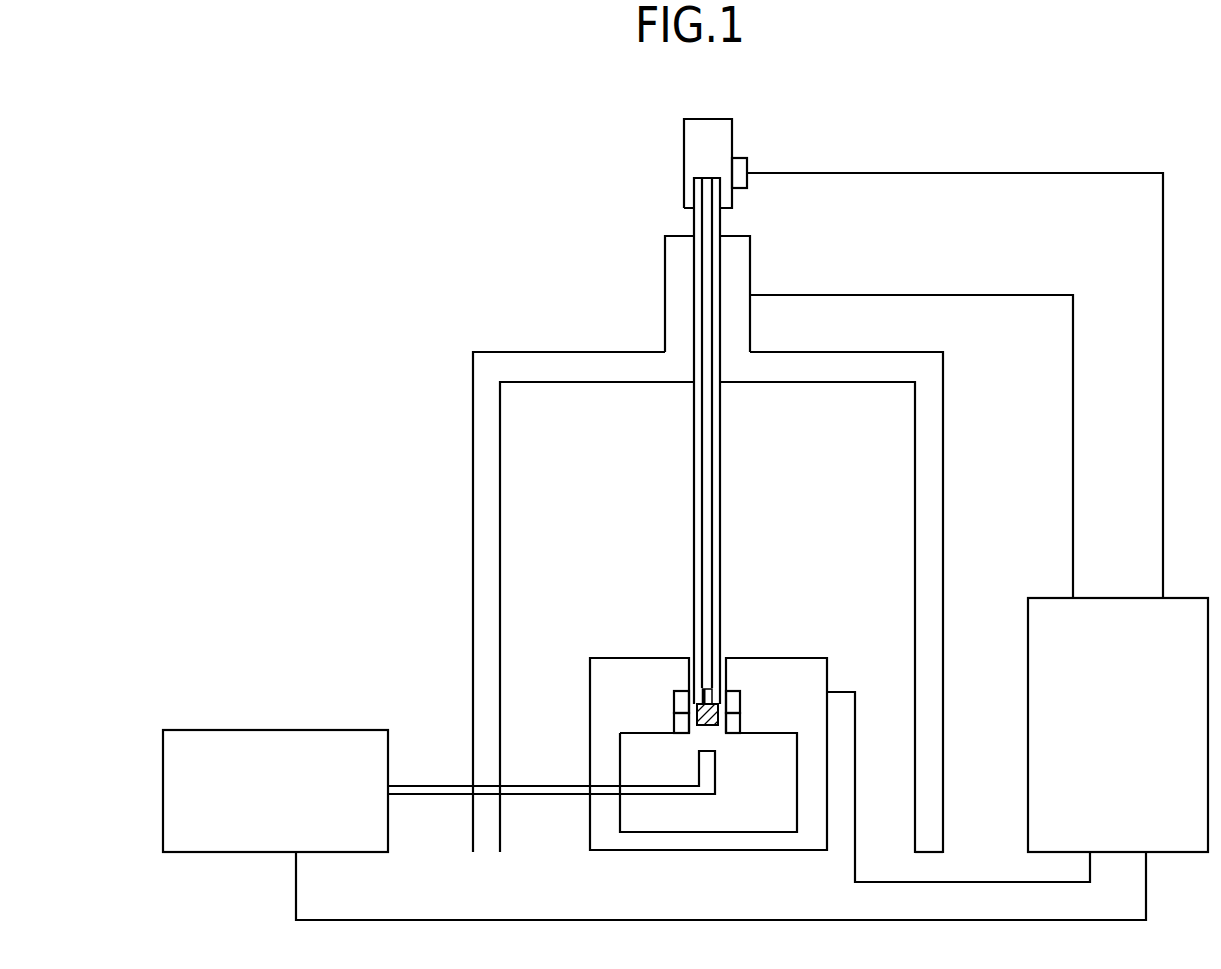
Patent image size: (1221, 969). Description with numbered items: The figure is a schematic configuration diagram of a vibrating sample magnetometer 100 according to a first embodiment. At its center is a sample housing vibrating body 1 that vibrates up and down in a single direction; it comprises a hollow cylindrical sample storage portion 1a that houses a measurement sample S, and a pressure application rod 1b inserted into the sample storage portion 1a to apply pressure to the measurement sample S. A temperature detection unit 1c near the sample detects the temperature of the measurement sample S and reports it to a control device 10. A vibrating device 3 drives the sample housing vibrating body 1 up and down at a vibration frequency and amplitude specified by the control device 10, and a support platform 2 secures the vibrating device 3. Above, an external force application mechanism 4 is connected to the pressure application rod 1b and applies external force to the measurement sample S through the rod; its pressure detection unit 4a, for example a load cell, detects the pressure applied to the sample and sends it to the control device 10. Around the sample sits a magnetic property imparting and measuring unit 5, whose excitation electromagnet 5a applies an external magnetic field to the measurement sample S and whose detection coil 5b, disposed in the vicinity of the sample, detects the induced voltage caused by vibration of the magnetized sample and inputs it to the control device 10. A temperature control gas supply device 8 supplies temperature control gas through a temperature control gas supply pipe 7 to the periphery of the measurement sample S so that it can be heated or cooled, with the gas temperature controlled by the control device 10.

The vibrating sample magnetometer 100 is at (1040, 205).
The sample housing vibrating body 1 is at (717, 441).
The sample storage portion 1a is at (722, 456).
The pressure application rod 1b is at (708, 472).
The temperature detection unit 1c is at (708, 690).
The support platform 2 is at (550, 366).
The vibrating device 3 is at (677, 254).
The external force application mechanism 4 is at (706, 128).
The pressure detection unit 4a is at (745, 160).
The magnetic property imparting and measuring unit 5 is at (631, 667).
The excitation electromagnet 5a is at (675, 703).
The detection coil 5b is at (675, 723).
The temperature control gas supply pipe 7 is at (438, 783).
The temperature control gas supply device 8 is at (297, 728).
The control device 10 is at (1190, 598).
The measurement sample S is at (707, 727).